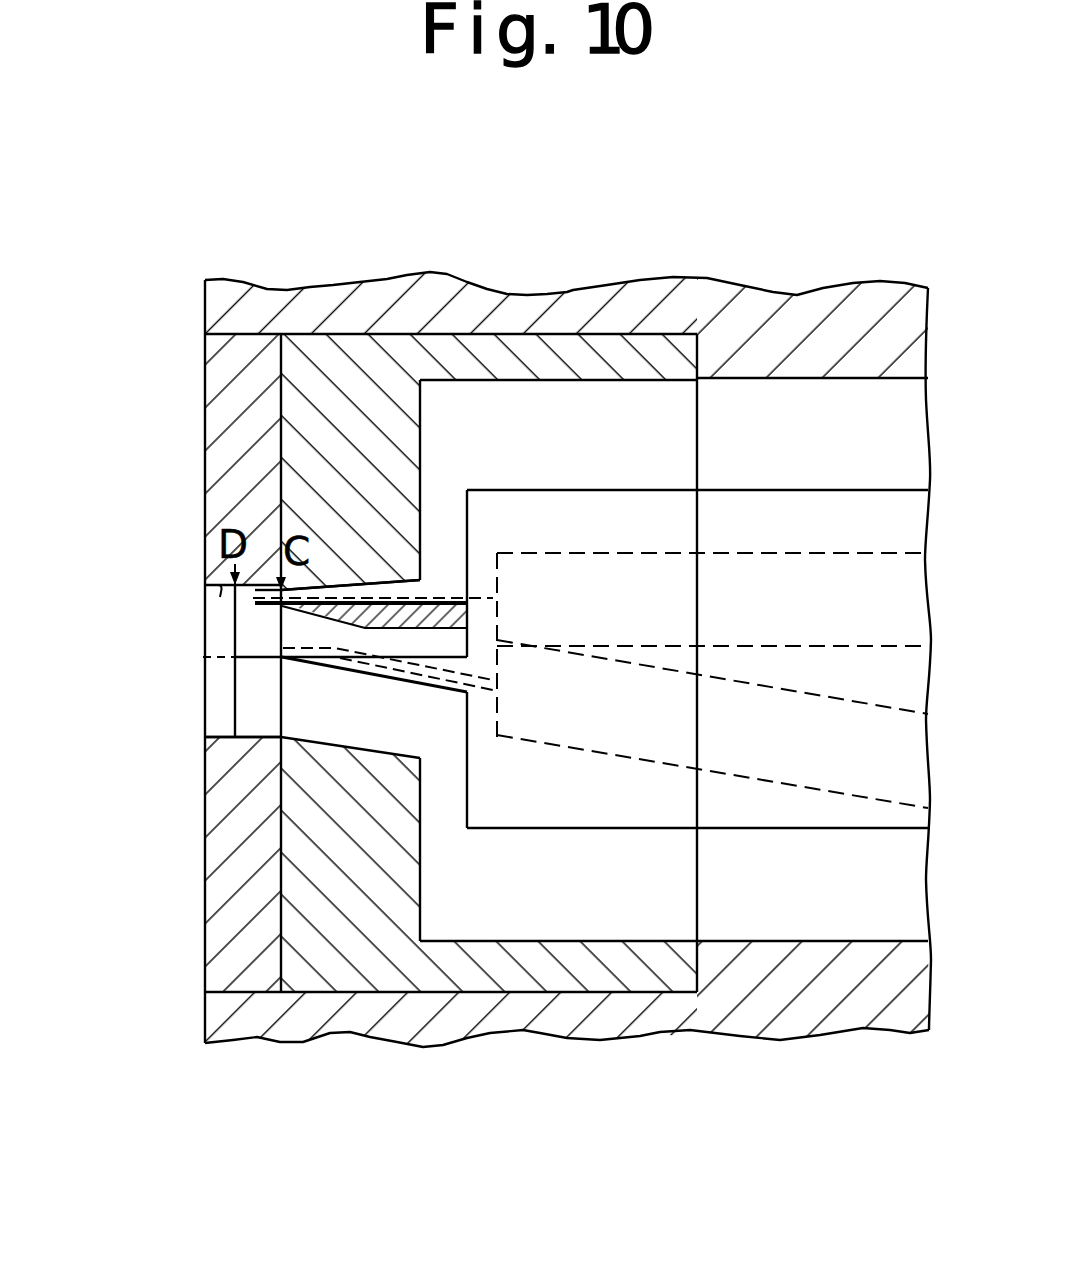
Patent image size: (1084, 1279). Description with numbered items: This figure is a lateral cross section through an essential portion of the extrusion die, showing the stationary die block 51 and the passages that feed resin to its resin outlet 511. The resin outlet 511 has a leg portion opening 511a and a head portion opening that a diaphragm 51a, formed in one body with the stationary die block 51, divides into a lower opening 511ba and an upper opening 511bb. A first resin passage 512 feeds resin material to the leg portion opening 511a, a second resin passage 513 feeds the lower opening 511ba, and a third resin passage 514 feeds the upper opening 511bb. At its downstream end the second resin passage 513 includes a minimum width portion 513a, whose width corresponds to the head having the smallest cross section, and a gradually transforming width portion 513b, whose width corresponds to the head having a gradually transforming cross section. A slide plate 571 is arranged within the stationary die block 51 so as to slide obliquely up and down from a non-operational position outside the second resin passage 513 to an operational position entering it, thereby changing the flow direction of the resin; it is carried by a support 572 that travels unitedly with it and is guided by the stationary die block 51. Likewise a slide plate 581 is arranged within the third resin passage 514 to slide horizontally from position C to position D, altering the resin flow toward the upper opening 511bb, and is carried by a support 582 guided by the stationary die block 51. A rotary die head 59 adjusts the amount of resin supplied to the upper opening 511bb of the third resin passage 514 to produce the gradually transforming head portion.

The stationary die block 51 is at (532, 333).
The diaphragm 51a is at (266, 597).
The rotary die head 59 is at (308, 418).
The resin outlet 511 is at (218, 597).
The leg portion opening 511a is at (257, 748).
The lower opening 511ba is at (202, 658).
The upper opening 511bb is at (270, 588).
The first resin passage 512 is at (636, 946).
The second resin passage 513 is at (422, 638).
The minimum width portion 513a is at (395, 625).
The gradually transforming width portion 513b is at (372, 612).
The third resin passage 514 is at (640, 385).
The slide plate 571 is at (366, 655).
The support 572 is at (774, 760).
The slide plate 581 is at (357, 597).
The support 582 is at (763, 575).